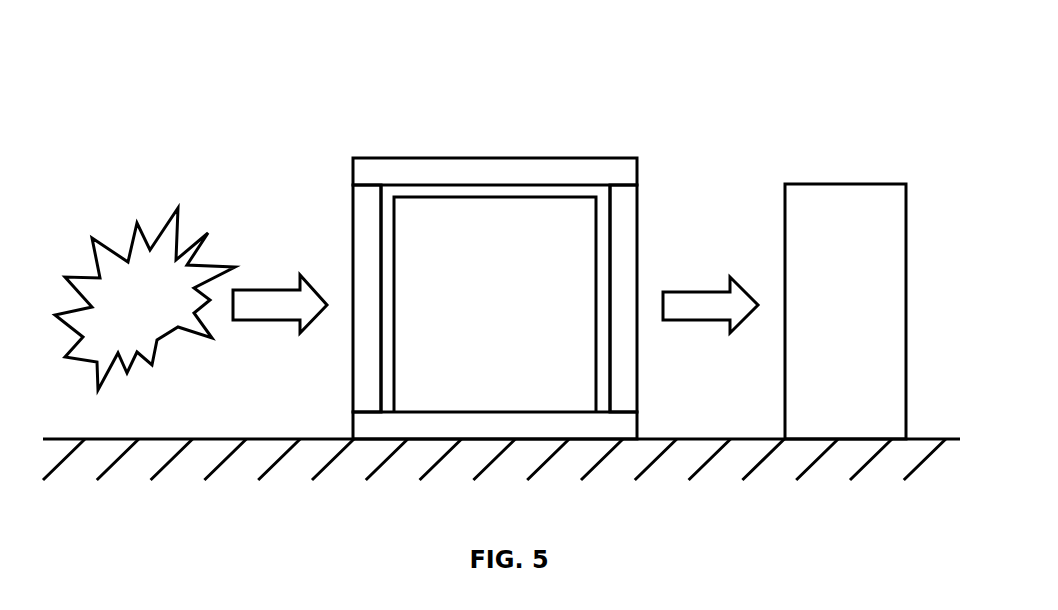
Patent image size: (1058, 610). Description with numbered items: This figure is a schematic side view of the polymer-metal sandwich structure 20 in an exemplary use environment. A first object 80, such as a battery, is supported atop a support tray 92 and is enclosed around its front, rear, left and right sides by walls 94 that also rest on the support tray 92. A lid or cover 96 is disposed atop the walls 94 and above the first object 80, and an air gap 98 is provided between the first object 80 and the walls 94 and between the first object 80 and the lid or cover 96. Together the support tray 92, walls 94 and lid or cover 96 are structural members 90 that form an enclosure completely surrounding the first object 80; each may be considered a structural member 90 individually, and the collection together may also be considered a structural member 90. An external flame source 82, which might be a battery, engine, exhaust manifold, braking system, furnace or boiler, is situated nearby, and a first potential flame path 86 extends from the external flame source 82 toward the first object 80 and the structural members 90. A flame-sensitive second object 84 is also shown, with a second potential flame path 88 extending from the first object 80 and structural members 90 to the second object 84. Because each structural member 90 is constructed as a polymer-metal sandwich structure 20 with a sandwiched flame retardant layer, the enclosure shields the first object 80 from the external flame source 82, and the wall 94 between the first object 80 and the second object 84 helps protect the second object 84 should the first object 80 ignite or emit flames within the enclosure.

The polymer-metal sandwich structure 20 is at (453, 250).
The structural member 90 is at (488, 256).
The first object 80 is at (480, 315).
The external flame source 82 is at (130, 313).
The second object 84 is at (829, 315).
The first potential flame path 86 is at (260, 305).
The second potential flame path 88 is at (683, 305).
The support tray 92 is at (622, 425).
The walls 94 is at (625, 236).
The lid or cover 96 is at (547, 168).
The air gap 98 is at (458, 190).